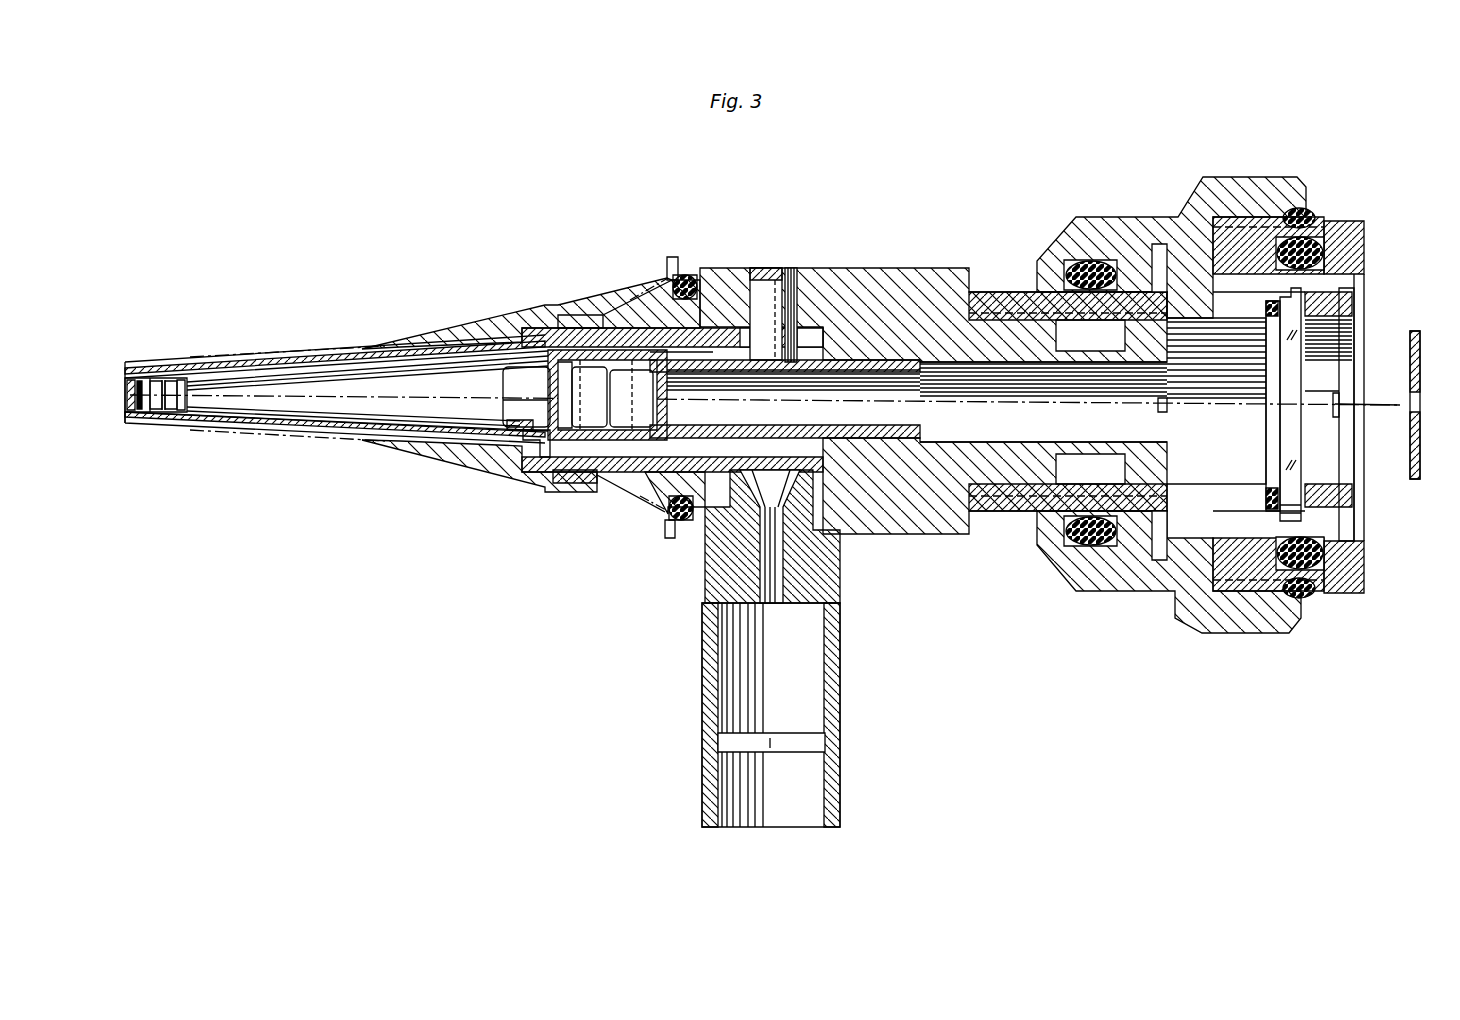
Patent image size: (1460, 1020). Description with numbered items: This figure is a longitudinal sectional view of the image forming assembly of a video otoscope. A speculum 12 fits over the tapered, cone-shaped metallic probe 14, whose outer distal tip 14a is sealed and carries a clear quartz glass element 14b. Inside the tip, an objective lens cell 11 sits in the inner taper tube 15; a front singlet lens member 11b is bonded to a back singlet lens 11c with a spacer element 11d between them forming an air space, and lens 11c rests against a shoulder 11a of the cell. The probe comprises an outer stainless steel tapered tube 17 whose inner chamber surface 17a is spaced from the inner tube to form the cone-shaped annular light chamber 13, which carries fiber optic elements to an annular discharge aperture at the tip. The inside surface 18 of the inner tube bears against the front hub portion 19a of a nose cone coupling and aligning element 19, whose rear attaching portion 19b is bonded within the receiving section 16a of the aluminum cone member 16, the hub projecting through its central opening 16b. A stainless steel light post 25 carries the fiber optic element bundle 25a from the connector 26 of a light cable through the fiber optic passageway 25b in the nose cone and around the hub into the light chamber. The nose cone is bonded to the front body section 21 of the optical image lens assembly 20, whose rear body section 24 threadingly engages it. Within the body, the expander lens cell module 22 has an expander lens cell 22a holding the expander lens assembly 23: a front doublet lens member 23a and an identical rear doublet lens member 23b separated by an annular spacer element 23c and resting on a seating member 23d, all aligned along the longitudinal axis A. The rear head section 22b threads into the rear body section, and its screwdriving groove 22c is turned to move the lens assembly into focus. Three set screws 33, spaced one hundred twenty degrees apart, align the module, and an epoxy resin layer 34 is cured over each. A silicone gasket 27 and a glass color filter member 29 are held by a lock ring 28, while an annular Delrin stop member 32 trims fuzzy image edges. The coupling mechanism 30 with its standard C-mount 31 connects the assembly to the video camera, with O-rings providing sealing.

The objective lens cell 11 is at (138, 376).
The shoulder 11a is at (181, 378).
The front singlet lens member 11b is at (151, 412).
The back singlet lens 11c is at (172, 412).
The spacer element 11d is at (163, 379).
The speculum 12 is at (362, 345).
The light chamber 13 is at (213, 368).
The speculum projection or probe 14 is at (283, 357).
The tip 14a is at (128, 418).
The clear quartz glass element 14b is at (128, 394).
The inner tube 15 is at (337, 424).
The cone member 16 is at (487, 334).
The receiving section 16a is at (732, 358).
The central opening 16b is at (500, 382).
The outer tapered tube 17 is at (268, 428).
The inner chamber surface 17a is at (310, 427).
The inside surface 18 is at (392, 425).
The nose cone coupling and aligning element 19 is at (558, 322).
The front hub portion 19a is at (480, 450).
The rear attaching portion 19b is at (543, 455).
The optical image lens assembly 20 is at (707, 268).
The front body section 21 is at (900, 503).
The expander lens cell module 22 is at (950, 348).
The expander lens cell 22a is at (582, 345).
The rear head section 22b is at (1175, 458).
The screwdriving groove 22c is at (1158, 406).
The expander lens assembly 23 is at (672, 381).
The front doublet lens member 23a is at (602, 368).
The rear doublet lens member 23b is at (632, 415).
The annular spacer element 23c is at (612, 432).
The seating member 23d is at (652, 365).
The rear body section 24 is at (990, 300).
The light post 25 is at (826, 561).
The fiber optic element bundle 25a is at (778, 592).
The fiber optic passageway 25b is at (583, 460).
The connector 26 is at (843, 688).
The silicone gasket 27 is at (1270, 452).
The lock ring 28 is at (1342, 435).
The color filter member 29 is at (1295, 460).
The coupling mechanism 30 is at (1120, 217).
The C-mount 31 is at (1366, 562).
The stop member 32 is at (1416, 330).
The set screws 33 is at (757, 268).
The epoxy resin layer 34 is at (792, 268).
The longitudinal axis A is at (1015, 402).